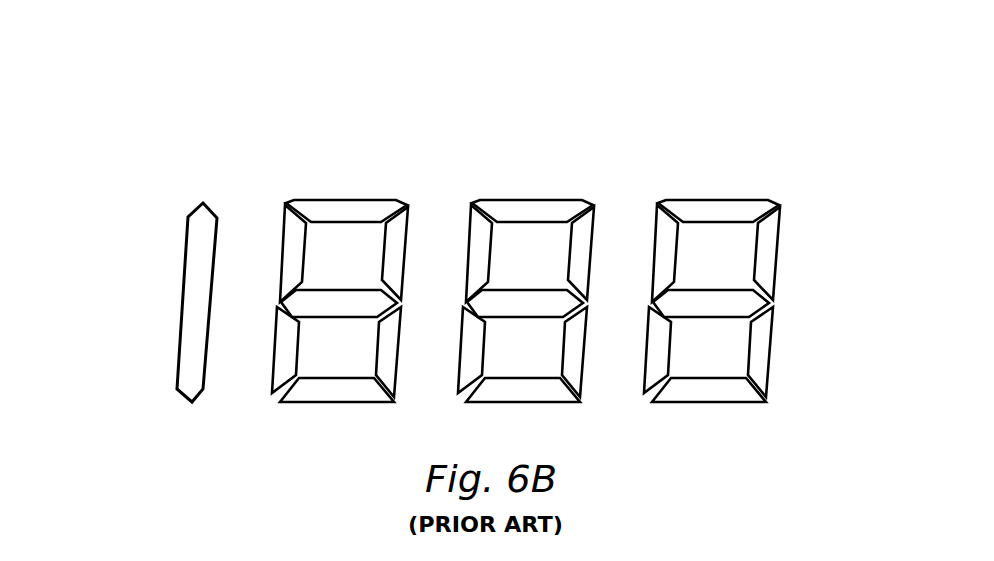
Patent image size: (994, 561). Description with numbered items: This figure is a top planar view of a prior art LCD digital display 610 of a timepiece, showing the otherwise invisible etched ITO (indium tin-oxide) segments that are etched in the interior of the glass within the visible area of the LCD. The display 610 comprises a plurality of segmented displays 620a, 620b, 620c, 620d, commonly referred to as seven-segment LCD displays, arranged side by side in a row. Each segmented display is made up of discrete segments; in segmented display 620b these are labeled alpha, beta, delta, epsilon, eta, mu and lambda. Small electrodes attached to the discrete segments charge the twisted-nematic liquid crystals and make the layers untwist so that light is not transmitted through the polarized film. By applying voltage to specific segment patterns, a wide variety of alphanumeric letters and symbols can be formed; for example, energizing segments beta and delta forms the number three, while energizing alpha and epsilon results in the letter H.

The LCD digital display 610 is at (767, 117).
The segmented display 620a is at (187, 210).
The segmented display 620b is at (333, 195).
The segmented display 620c is at (527, 195).
The segmented display 620d is at (717, 197).